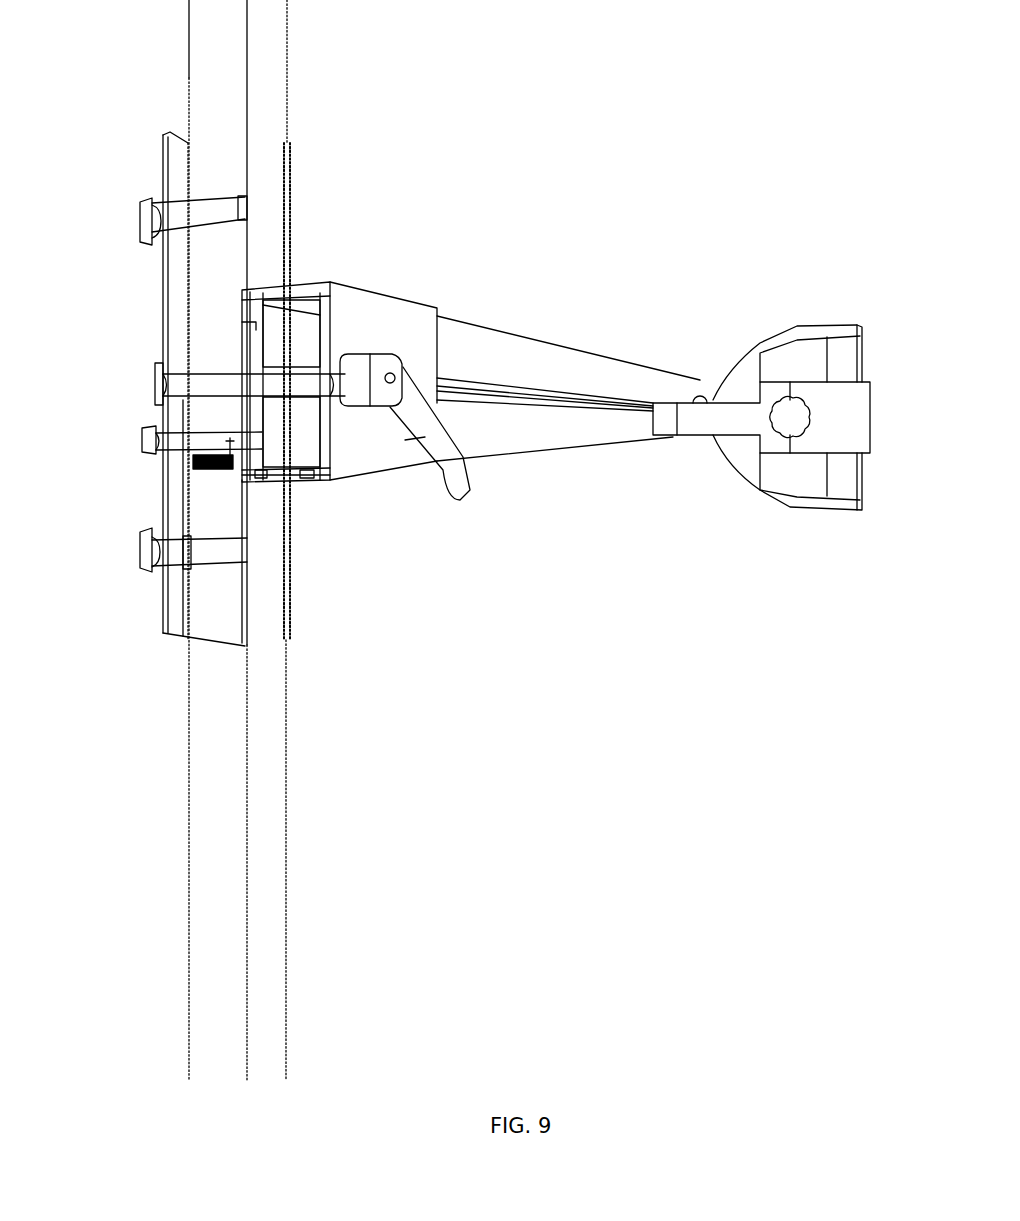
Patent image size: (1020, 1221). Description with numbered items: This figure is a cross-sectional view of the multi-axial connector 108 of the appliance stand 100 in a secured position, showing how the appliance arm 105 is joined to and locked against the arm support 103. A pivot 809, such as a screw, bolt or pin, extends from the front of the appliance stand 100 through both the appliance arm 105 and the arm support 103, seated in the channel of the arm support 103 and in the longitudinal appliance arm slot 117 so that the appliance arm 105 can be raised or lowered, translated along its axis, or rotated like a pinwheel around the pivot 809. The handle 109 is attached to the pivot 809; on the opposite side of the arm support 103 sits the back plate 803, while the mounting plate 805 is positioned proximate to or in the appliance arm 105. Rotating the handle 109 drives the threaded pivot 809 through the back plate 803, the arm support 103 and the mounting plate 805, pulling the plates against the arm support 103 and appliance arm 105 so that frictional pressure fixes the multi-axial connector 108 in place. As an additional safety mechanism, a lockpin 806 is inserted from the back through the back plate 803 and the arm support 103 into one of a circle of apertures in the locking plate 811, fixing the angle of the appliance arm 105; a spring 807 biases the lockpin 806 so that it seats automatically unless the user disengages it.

The appliance stand 100 is at (809, 53).
The arm support 103 is at (286, 540).
The appliance arm 105 is at (557, 373).
The multi-axial connector 108 is at (395, 288).
The handle 109 is at (437, 491).
The appliance arm slot 117 is at (478, 377).
The back plate 803 is at (178, 272).
The mounting plate 805 is at (359, 355).
The lockpin 806 is at (144, 452).
The spring 807 is at (193, 465).
The pivot 809 is at (153, 395).
The locking plate 811 is at (320, 551).